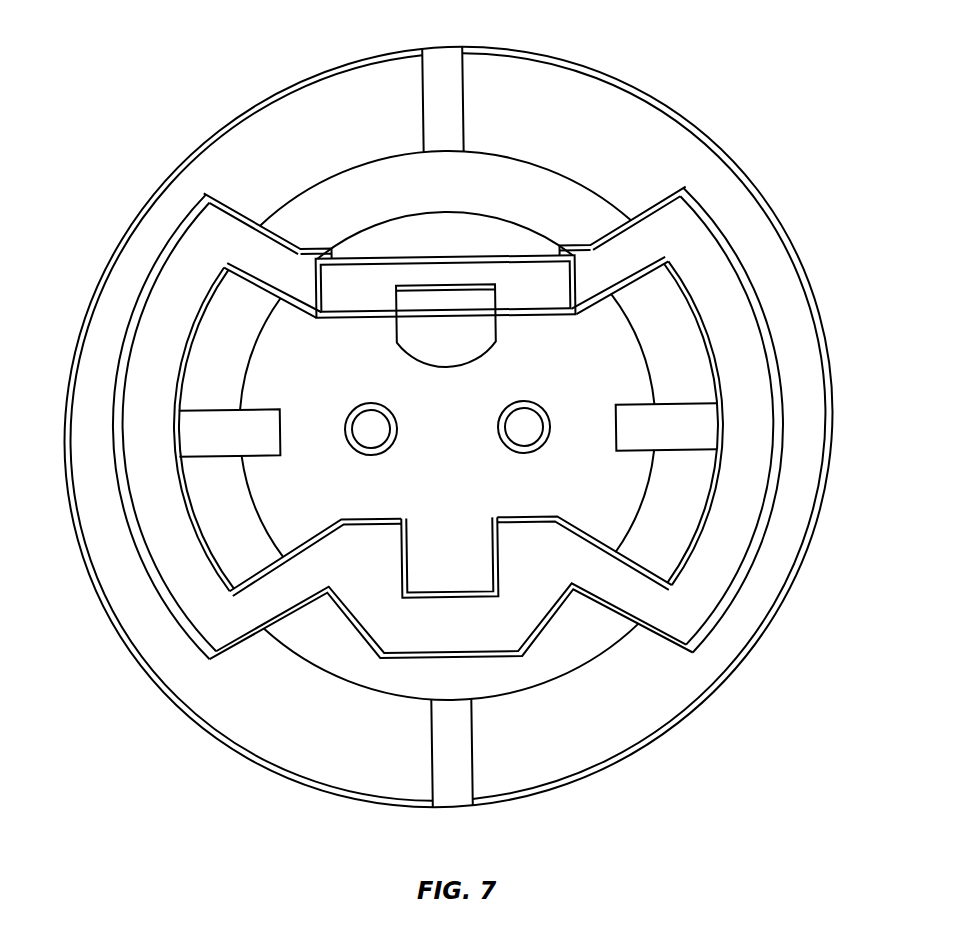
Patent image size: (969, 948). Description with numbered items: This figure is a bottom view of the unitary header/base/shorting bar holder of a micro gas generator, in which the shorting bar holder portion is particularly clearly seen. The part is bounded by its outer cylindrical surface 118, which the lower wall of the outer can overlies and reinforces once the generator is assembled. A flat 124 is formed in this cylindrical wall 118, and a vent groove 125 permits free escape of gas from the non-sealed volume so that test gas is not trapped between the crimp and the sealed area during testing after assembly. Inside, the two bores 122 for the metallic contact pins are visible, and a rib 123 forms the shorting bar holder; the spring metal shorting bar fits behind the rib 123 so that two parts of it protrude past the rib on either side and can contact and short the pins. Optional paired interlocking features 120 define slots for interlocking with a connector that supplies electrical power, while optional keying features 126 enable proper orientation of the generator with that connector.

The outer cylindrical surface 118 is at (181, 150).
The interlocking feature 120 is at (150, 329).
The bore 122 is at (345, 431).
The rib 123 is at (479, 341).
The flat 124 is at (470, 50).
The vent groove 125 is at (440, 57).
The keying feature 126 is at (371, 533).